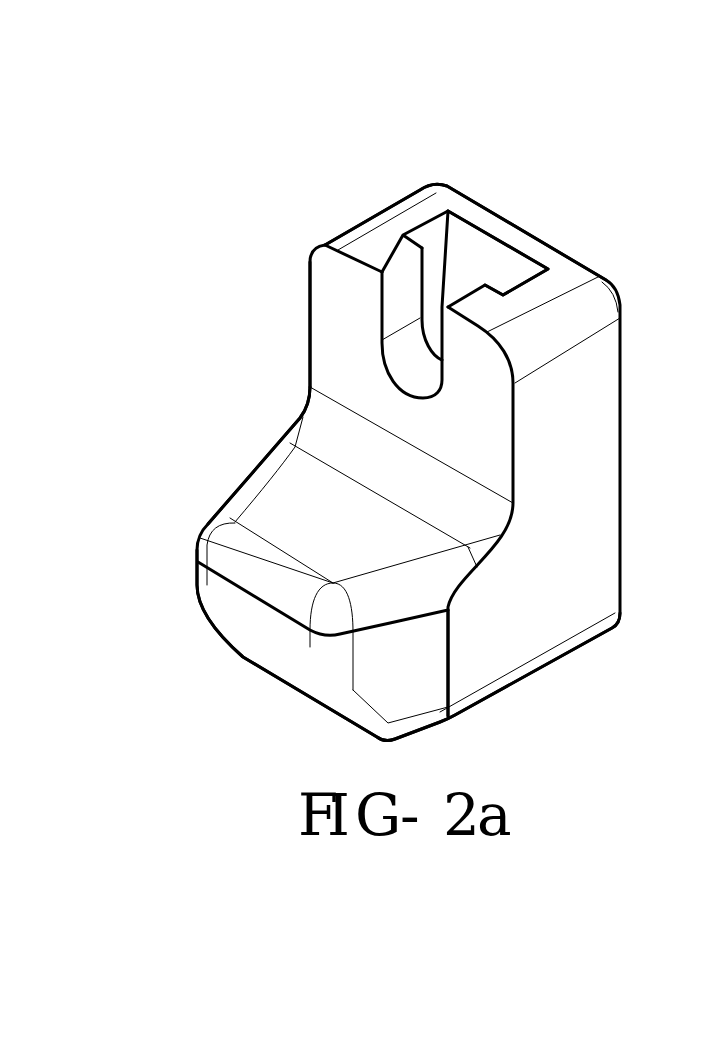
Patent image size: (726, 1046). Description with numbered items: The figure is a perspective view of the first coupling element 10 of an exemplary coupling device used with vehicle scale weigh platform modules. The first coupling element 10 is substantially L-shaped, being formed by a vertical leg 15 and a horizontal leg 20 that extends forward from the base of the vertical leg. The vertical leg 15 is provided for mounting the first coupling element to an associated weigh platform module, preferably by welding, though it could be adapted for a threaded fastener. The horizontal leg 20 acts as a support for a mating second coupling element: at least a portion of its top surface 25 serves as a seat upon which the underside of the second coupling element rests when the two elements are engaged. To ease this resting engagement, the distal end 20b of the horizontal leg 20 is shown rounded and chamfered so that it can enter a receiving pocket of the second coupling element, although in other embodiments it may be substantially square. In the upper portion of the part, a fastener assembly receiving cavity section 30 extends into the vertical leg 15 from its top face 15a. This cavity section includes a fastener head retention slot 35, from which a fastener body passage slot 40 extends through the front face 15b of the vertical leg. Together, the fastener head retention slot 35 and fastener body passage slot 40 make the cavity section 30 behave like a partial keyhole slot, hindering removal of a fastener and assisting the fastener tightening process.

The first coupling element 10 is at (243, 186).
The vertical leg 15 is at (578, 447).
The top face 15a is at (418, 217).
The front face 15b is at (343, 342).
The fastener assembly receiving cavity section 30 is at (496, 218).
The fastener head retention slot 35 is at (527, 275).
The fastener body passage slot 40 is at (397, 296).
The top surface 25 is at (305, 517).
The horizontal leg 20 is at (475, 678).
The distal end 20b is at (248, 603).